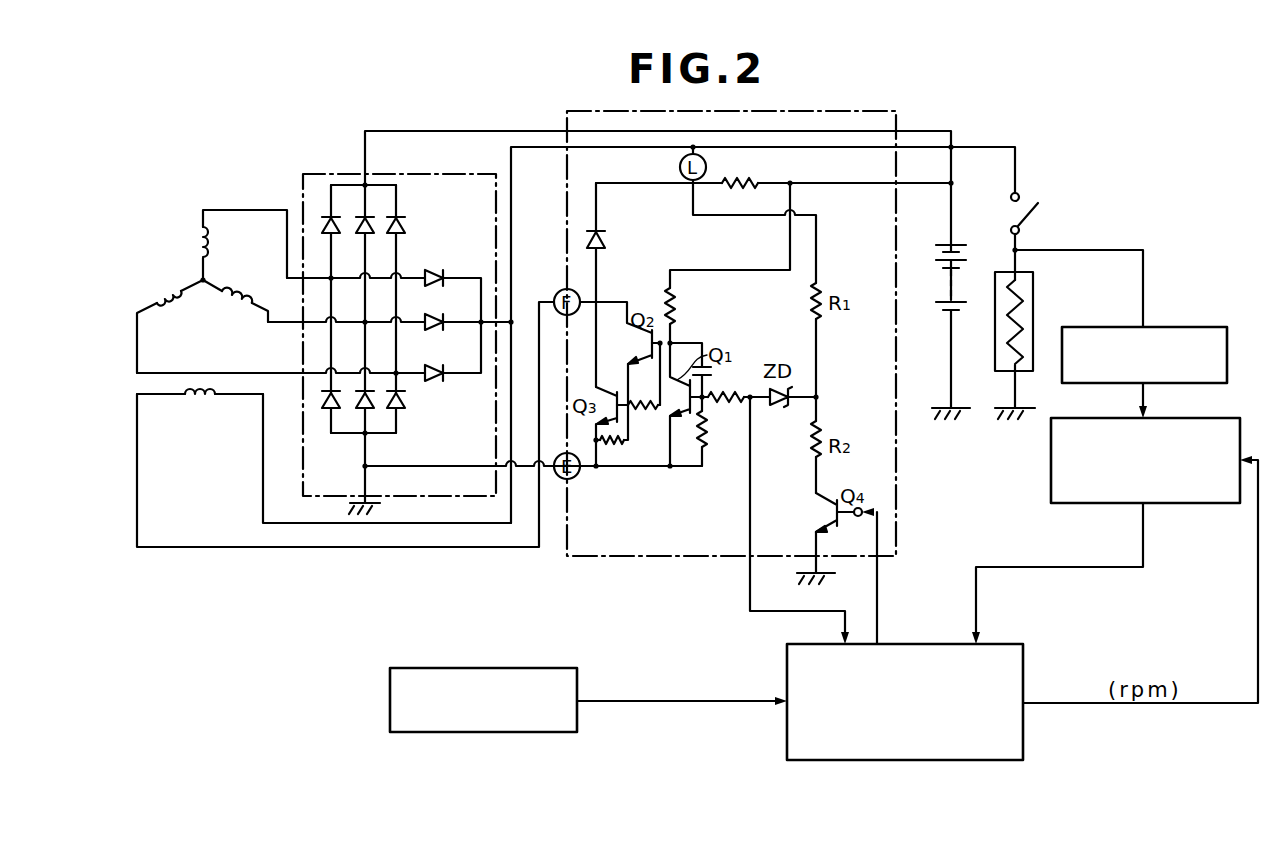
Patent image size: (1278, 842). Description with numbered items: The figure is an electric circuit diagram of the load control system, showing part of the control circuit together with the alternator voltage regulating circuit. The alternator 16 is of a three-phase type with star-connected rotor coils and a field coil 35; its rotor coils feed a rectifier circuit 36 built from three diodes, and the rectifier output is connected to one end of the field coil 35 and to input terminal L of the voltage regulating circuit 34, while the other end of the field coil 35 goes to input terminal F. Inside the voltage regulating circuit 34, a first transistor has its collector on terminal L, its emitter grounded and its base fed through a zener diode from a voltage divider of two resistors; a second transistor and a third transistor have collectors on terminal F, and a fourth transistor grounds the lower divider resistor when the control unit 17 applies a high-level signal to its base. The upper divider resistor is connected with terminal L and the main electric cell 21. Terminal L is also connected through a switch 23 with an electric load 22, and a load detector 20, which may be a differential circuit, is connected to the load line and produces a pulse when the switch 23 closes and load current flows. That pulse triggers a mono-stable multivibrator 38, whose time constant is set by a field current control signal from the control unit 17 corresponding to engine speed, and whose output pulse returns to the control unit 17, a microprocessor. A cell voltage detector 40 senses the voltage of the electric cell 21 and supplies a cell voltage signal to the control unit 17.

The alternator 16 is at (210, 293).
The field coil 35 is at (203, 402).
The rectifier circuit 36 is at (313, 174).
The voltage regulating circuit 34 is at (877, 111).
The main electric cell 21 is at (937, 270).
The switch 23 is at (1043, 219).
The electric load 22 is at (1035, 312).
The load detector 20 is at (1188, 326).
The mono-stable multivibrator 38 is at (1203, 418).
The control unit 17 is at (1023, 685).
The cell voltage detector 40 is at (577, 678).